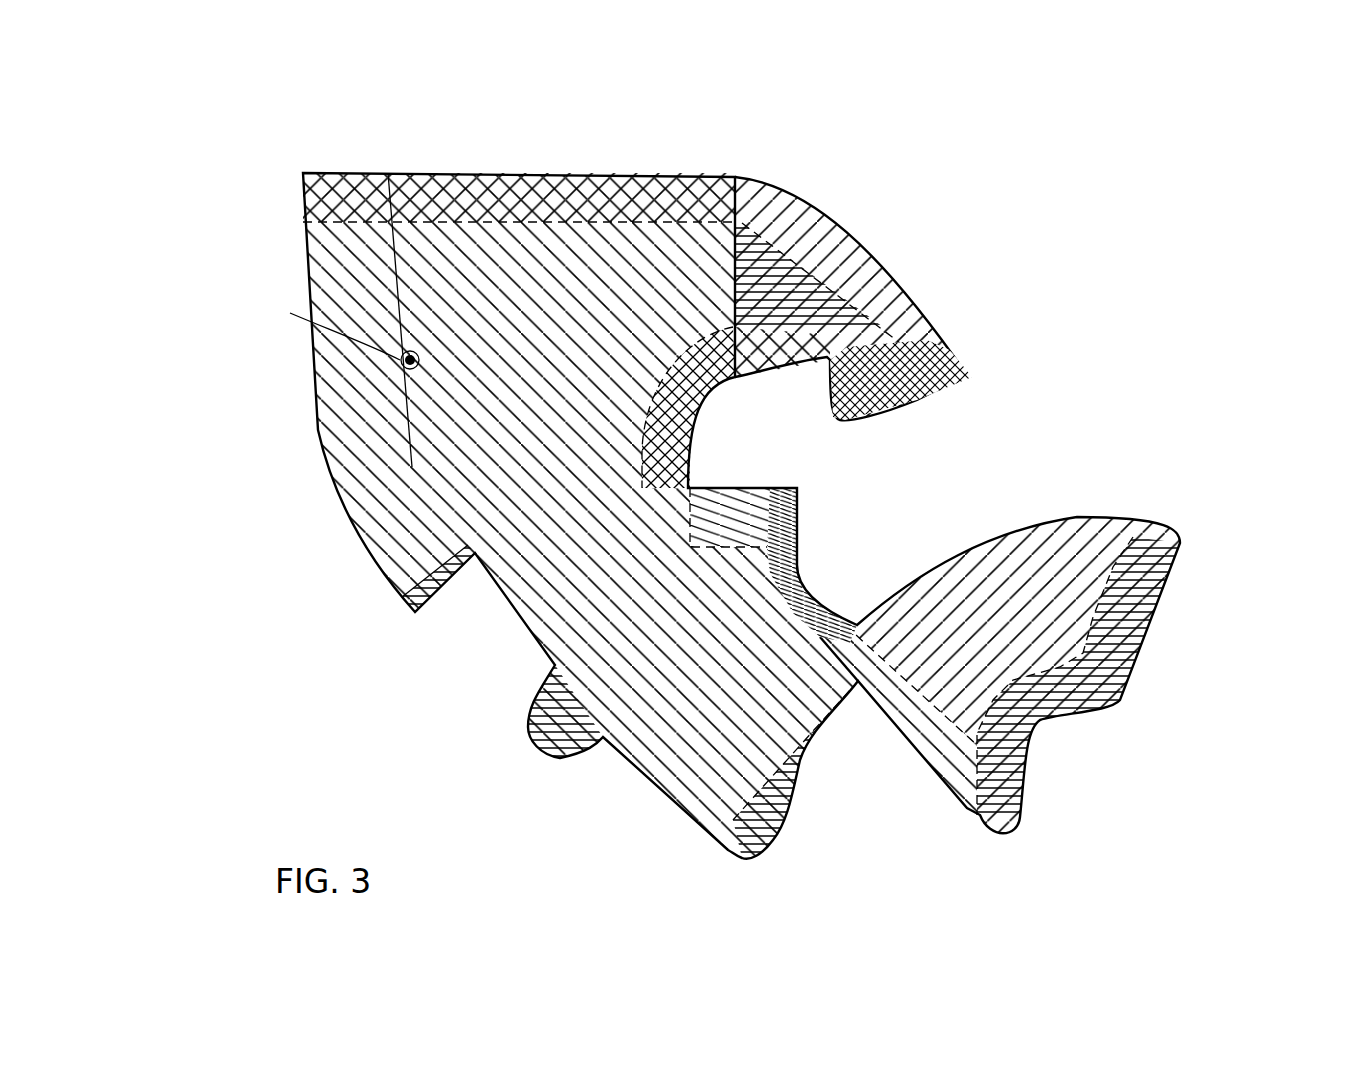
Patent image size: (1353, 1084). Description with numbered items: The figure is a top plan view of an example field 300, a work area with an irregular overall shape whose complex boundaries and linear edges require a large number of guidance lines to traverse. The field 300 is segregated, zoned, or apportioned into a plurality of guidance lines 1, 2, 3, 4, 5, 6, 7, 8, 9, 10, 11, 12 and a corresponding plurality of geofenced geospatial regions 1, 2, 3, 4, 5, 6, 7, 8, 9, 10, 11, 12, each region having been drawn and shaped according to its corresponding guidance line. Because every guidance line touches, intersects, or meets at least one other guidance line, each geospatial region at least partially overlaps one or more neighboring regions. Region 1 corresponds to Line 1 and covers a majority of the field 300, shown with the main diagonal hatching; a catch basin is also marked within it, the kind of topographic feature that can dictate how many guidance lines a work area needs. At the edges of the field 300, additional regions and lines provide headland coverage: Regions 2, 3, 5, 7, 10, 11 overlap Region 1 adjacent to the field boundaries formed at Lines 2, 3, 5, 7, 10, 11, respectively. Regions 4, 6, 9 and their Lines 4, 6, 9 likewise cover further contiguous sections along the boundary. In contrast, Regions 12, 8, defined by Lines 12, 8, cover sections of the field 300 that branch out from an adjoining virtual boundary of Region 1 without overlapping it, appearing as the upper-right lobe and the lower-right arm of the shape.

The field 300 is at (701, 499).
The guidance line and geospatial region 1 is at (473, 410).
The guidance line and geospatial region 2 is at (406, 627).
The guidance line and geospatial region 3 is at (418, 200).
The guidance line and geospatial region 4 is at (950, 355).
The guidance line and geospatial region 5 is at (745, 405).
The guidance line and geospatial region 6 is at (737, 507).
The guidance line and geospatial region 7 is at (830, 597).
The guidance line and geospatial region 8 is at (1100, 543).
The guidance line and geospatial region 9 is at (1140, 637).
The guidance line and geospatial region 10 is at (793, 787).
The guidance line and geospatial region 11 is at (535, 757).
The guidance line and geospatial region 12 is at (860, 237).